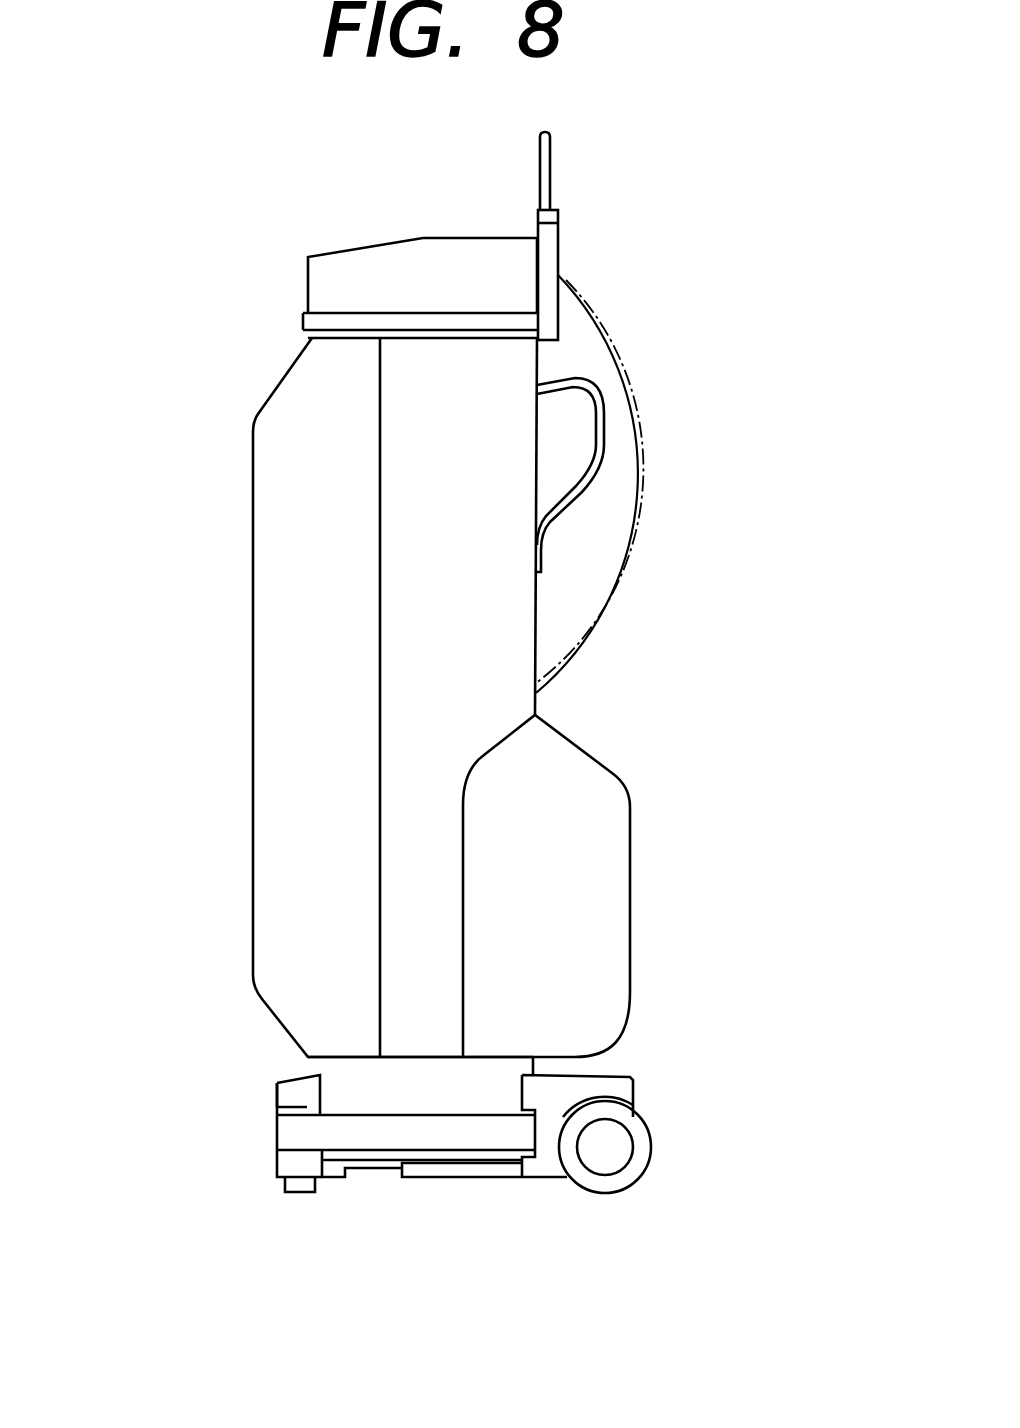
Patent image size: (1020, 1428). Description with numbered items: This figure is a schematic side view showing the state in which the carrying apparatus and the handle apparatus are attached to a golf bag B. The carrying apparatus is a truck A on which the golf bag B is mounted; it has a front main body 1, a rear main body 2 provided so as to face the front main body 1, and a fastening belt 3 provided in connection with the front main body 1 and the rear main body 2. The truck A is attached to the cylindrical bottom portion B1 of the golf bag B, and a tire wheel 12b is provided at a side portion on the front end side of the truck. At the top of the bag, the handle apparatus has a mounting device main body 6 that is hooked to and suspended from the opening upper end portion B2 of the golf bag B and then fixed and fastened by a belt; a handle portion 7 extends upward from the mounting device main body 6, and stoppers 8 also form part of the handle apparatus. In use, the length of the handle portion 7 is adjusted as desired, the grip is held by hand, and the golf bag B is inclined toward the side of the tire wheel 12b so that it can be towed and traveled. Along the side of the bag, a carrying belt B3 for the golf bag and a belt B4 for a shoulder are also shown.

The truck A is at (658, 1080).
The golf bag B is at (290, 588).
The cylindrical bottom portion B1 is at (403, 1087).
The opening upper end portion B2 is at (327, 298).
The carrying belt B3 is at (593, 490).
The belt for a shoulder B4 is at (640, 415).
The front main body 1 is at (615, 1054).
The rear main body 2 is at (256, 1074).
The fastening belt 3 is at (474, 1145).
The mounting device main body 6 is at (575, 242).
The handle portion 7 is at (565, 151).
The stoppers 8 is at (522, 214).
The tire wheel 12b is at (633, 1187).